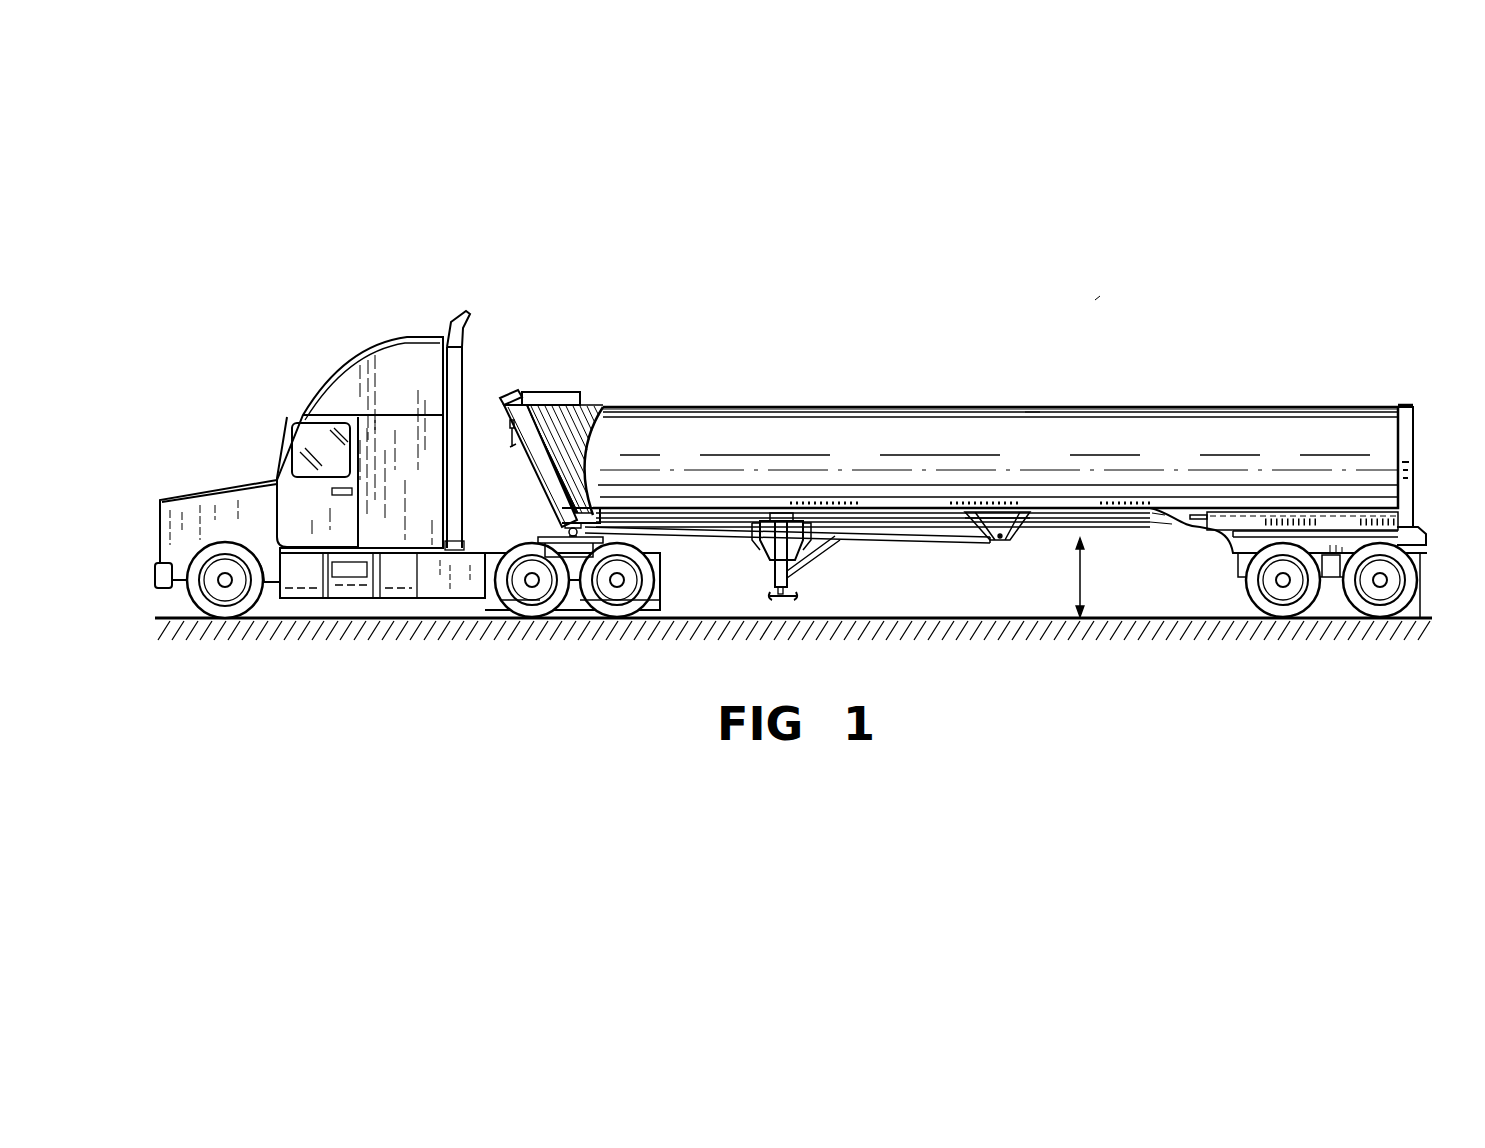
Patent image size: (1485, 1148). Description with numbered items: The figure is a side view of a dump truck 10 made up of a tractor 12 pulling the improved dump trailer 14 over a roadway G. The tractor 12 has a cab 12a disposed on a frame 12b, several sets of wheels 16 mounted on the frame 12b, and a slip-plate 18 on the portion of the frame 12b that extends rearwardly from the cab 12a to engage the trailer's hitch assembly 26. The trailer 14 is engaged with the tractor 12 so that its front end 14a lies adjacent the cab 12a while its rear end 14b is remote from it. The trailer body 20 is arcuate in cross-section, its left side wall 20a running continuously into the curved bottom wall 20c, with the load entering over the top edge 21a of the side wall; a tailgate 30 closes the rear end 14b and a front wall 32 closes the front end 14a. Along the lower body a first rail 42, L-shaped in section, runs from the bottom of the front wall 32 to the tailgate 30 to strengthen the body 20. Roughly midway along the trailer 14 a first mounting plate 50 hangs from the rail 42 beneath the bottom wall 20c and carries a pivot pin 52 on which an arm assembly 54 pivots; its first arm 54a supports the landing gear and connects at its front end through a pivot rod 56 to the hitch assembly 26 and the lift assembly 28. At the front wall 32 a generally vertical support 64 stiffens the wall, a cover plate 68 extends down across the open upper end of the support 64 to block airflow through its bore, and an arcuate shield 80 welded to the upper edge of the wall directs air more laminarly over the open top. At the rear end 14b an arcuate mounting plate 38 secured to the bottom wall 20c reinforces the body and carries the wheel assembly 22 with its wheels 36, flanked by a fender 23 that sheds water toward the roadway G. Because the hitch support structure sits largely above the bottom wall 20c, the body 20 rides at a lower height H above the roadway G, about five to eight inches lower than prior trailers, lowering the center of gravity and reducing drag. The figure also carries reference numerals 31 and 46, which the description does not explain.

The truck 10 is at (1099, 297).
The tractor 12 is at (461, 516).
The cab 12a is at (212, 488).
The frame 12b is at (490, 552).
The trailer 14 is at (963, 510).
The front end 14a is at (541, 379).
The rear end 14b is at (1414, 423).
The wheels 16 is at (210, 603).
The slip-plate 18 is at (600, 575).
The trailer body 20 is at (991, 427).
The left side wall 20a is at (952, 456).
The bottom wall 20c is at (1128, 529).
The top edge 21a is at (932, 405).
The wheel assembly 22 is at (1329, 638).
The fender 23 is at (1293, 517).
The hitch assembly 26 is at (550, 545).
The lift assembly 28 is at (533, 477).
The tailgate 30 is at (1408, 458).
The rear top edge 31 is at (1412, 405).
The front wall 32 is at (550, 441).
The wheels 36 is at (1285, 605).
The mounting plate 38 is at (1186, 523).
The first rail 42 is at (1097, 505).
The top seam 46 is at (1030, 412).
The first mounting plate 50 is at (1005, 522).
The pivot pin 52 is at (1000, 533).
The arm assembly 54 is at (858, 546).
The first arm 54a is at (716, 532).
The pivot rod 56 is at (574, 523).
The support 64 is at (507, 417).
The cover plate 68 is at (513, 419).
The shield 80 is at (560, 390).
The roadway G is at (958, 614).
The height H is at (1076, 577).